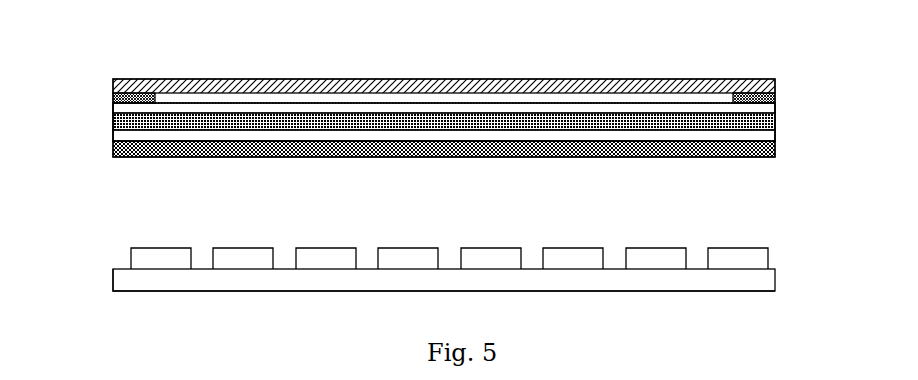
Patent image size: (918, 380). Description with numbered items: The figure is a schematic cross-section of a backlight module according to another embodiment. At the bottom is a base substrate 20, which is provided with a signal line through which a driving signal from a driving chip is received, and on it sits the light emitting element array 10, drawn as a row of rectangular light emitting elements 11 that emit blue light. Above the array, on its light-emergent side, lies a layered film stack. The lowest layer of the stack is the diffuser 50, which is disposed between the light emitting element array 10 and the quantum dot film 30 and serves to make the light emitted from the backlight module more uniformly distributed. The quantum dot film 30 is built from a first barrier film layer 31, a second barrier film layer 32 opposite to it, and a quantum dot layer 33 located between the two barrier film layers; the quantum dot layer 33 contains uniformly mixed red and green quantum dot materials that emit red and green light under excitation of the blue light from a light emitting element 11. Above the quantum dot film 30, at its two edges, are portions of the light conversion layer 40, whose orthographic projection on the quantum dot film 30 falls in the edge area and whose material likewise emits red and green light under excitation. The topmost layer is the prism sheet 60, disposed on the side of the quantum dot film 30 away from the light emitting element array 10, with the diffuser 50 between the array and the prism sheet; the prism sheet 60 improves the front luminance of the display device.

The light emitting element array 10 is at (768, 260).
The light emitting element 11 is at (774, 253).
The base substrate 20 is at (119, 277).
The quantum dot film 30 is at (834, 98).
The first barrier film layer 31 is at (775, 133).
The second barrier film layer 32 is at (775, 105).
The quantum dot layer 33 is at (775, 118).
The light conversion layer 40 is at (113, 97).
The diffuser 50 is at (113, 148).
The prism sheet 60 is at (746, 80).